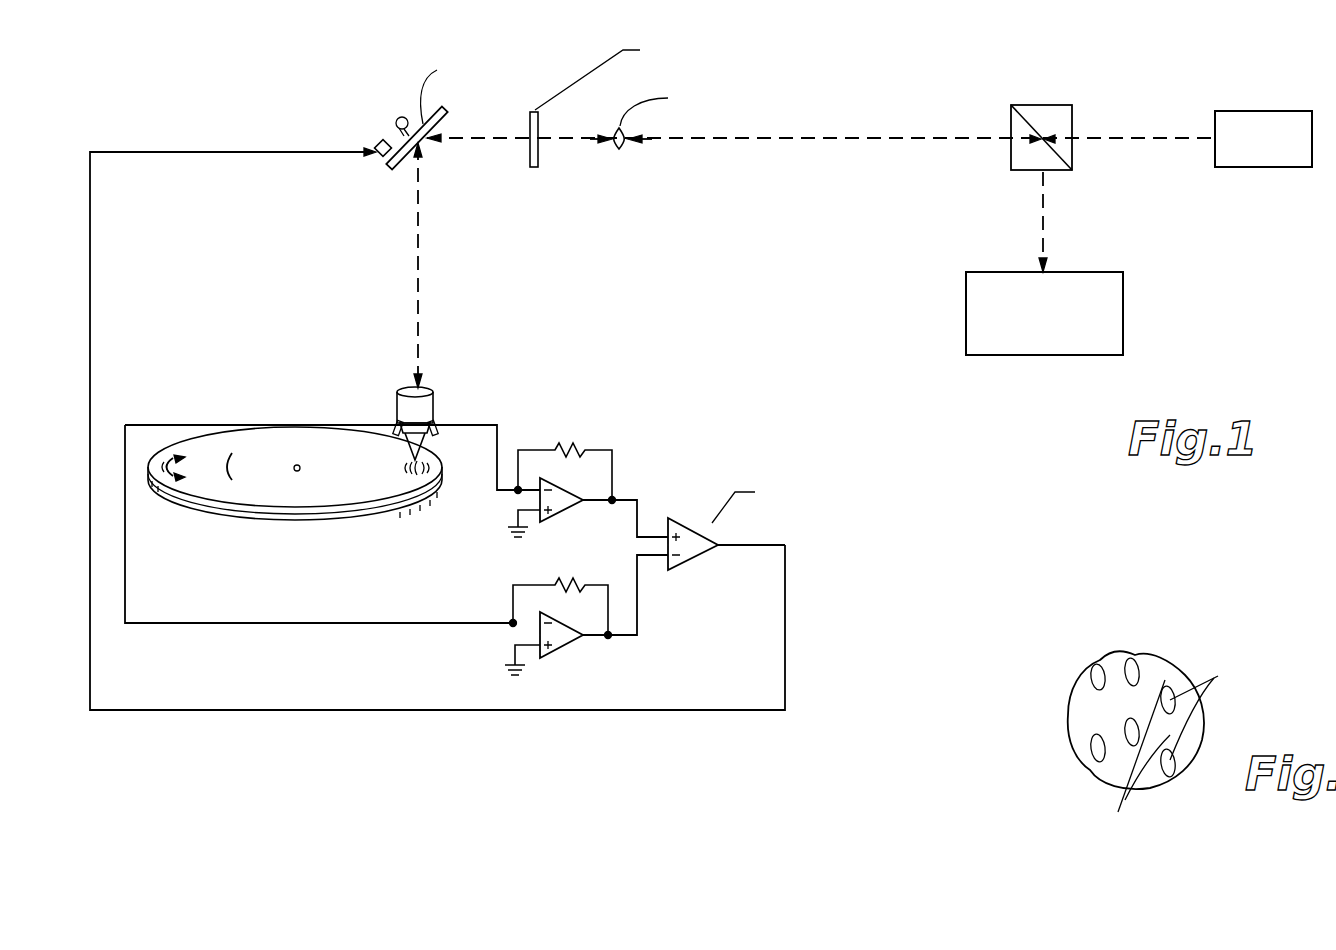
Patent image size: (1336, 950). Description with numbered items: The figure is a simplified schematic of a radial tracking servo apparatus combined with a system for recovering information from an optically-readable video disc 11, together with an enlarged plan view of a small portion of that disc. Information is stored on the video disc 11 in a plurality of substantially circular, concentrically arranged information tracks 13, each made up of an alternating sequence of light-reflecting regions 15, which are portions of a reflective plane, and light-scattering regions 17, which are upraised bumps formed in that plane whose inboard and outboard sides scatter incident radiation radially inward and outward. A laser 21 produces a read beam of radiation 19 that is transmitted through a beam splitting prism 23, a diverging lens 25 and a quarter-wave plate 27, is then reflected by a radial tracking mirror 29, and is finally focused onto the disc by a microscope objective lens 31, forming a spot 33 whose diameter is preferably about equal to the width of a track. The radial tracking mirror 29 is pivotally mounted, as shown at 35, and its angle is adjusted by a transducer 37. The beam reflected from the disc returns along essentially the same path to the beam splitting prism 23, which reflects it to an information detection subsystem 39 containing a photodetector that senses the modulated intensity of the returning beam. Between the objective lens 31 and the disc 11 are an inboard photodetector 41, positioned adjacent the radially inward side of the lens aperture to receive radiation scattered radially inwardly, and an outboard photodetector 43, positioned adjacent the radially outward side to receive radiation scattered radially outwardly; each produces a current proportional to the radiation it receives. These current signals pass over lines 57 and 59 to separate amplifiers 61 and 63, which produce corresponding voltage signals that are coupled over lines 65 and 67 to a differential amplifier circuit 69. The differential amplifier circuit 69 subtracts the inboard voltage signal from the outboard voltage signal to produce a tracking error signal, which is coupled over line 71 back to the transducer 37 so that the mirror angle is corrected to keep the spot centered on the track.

In FIG. 1, the video disc 11 is at (260, 492).
In FIG. 1A, the information tracks 13 is at (1175, 655).
In FIG. 1A, the light-reflecting regions 15 is at (1135, 758).
In FIG. 1A, the light-scattering regions 17 is at (1210, 711).
In FIG. 1, the read beam of radiation 19 is at (420, 262).
In FIG. 1, the laser 21 is at (1265, 167).
In FIG. 1, the beam splitting prism 23 is at (1018, 160).
In FIG. 1, the diverging lens 25 is at (620, 150).
In FIG. 1, the quarter-wave plate 27 is at (535, 168).
In FIG. 1, the radial tracking mirror 29 is at (396, 165).
In FIG. 1, the microscope objective lens 31 is at (432, 393).
In FIG. 1, the spot 33 is at (420, 458).
In FIG. 1, the pivotal mounting 35 is at (403, 116).
In FIG. 1, the transducer 37 is at (380, 143).
In FIG. 1, the information detection subsystem 39 is at (1123, 273).
In FIG. 1, the inboard photodetector 41 is at (397, 424).
In FIG. 1, the outboard photodetector 43 is at (436, 424).
In FIG. 1, the line 57 is at (325, 623).
In FIG. 1, the line 59 is at (495, 490).
In FIG. 1, the amplifier 61 is at (573, 652).
In FIG. 1, the amplifier 63 is at (574, 520).
In FIG. 1, the line 65 is at (638, 605).
In FIG. 1, the line 67 is at (640, 500).
In FIG. 1, the differential amplifier circuit 69 is at (700, 558).
In FIG. 1, the line 71 is at (315, 710).